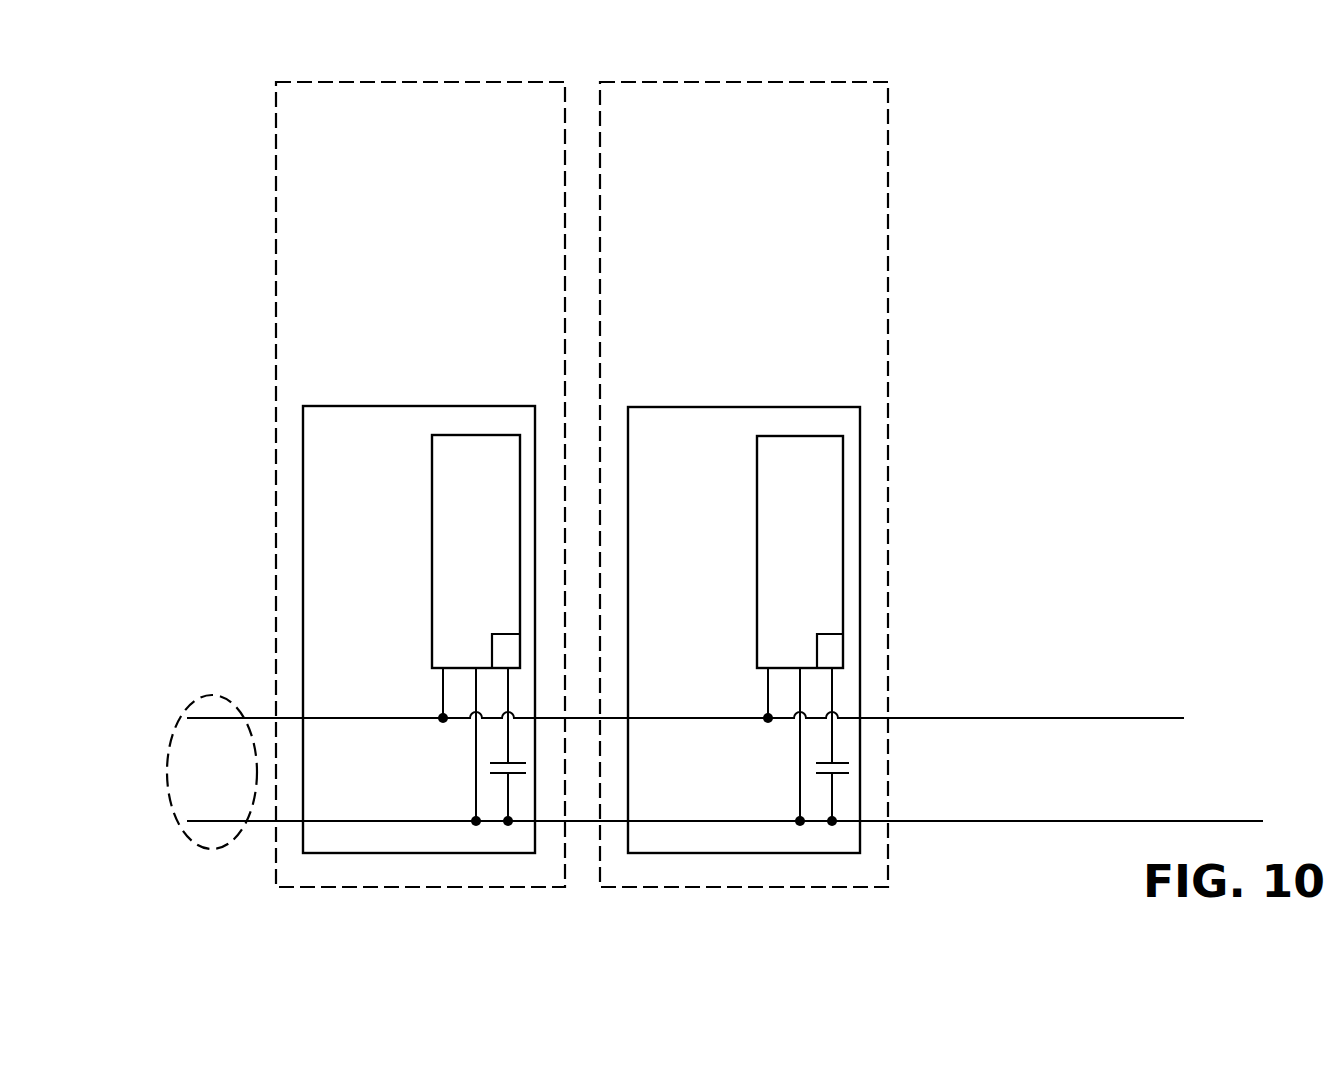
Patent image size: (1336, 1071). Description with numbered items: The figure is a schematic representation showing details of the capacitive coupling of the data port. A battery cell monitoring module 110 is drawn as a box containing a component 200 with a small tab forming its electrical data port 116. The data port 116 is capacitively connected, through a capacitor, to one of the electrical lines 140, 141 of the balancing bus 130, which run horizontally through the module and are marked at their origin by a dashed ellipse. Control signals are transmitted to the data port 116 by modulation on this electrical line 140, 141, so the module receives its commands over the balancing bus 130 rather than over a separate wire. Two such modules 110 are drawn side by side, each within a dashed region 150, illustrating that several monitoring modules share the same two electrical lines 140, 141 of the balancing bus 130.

The battery cell monitoring module 110 is at (433, 842).
The electrical data port 116 is at (498, 646).
The balancing bus 130 is at (192, 842).
The electrical line 140 is at (1072, 717).
The electrical line 141 is at (1037, 821).
The module region 150 is at (303, 97).
The electronic component 200 is at (497, 556).